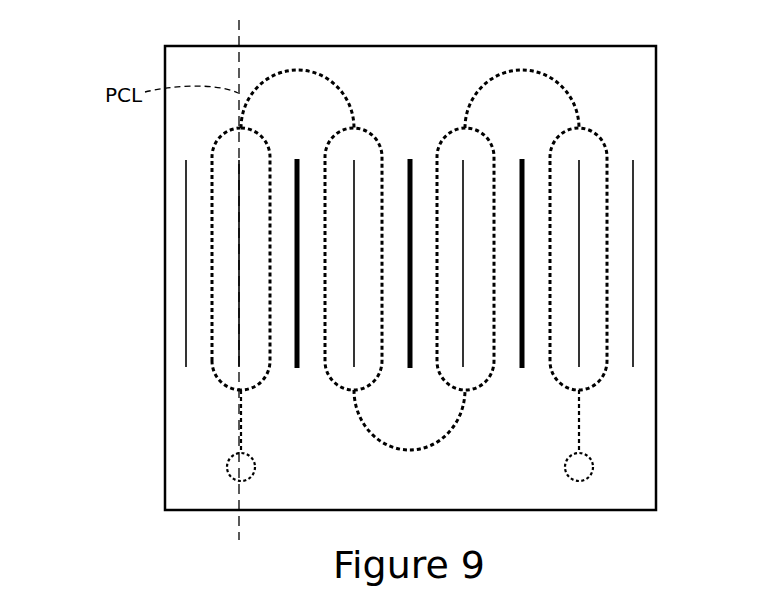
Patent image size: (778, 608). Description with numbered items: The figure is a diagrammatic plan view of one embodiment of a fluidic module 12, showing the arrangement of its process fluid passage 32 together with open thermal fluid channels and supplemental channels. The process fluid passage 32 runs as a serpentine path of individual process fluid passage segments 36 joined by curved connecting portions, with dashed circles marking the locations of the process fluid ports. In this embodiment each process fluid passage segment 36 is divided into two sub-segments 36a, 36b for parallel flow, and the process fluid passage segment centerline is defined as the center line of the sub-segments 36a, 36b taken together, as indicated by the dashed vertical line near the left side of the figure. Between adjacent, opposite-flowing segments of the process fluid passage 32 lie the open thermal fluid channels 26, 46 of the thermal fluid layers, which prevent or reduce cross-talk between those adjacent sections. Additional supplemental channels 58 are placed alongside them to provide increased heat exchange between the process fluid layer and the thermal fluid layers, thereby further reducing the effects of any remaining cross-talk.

The fluidic module 12 is at (228, 562).
The open thermal fluid channel 26 is at (455, 356).
The open thermal fluid channel 46 is at (300, 333).
The process fluid passage 32 is at (367, 268).
The process fluid passage segment 36 is at (146, 302).
The first sub-segment 36a is at (226, 259).
The second sub-segment 36b is at (255, 259).
The supplemental channel 58 is at (239, 262).